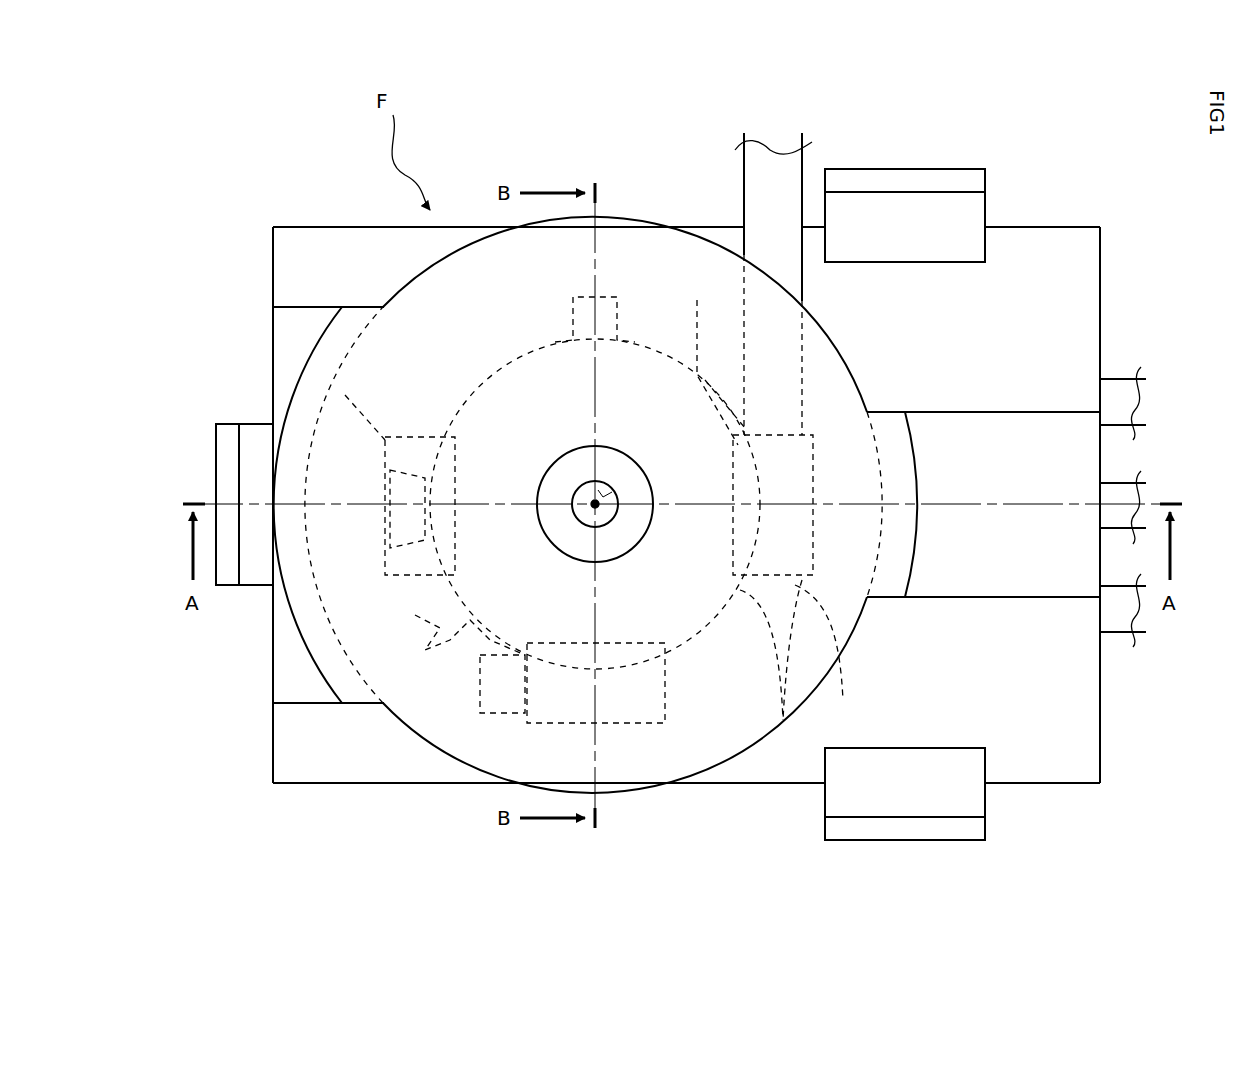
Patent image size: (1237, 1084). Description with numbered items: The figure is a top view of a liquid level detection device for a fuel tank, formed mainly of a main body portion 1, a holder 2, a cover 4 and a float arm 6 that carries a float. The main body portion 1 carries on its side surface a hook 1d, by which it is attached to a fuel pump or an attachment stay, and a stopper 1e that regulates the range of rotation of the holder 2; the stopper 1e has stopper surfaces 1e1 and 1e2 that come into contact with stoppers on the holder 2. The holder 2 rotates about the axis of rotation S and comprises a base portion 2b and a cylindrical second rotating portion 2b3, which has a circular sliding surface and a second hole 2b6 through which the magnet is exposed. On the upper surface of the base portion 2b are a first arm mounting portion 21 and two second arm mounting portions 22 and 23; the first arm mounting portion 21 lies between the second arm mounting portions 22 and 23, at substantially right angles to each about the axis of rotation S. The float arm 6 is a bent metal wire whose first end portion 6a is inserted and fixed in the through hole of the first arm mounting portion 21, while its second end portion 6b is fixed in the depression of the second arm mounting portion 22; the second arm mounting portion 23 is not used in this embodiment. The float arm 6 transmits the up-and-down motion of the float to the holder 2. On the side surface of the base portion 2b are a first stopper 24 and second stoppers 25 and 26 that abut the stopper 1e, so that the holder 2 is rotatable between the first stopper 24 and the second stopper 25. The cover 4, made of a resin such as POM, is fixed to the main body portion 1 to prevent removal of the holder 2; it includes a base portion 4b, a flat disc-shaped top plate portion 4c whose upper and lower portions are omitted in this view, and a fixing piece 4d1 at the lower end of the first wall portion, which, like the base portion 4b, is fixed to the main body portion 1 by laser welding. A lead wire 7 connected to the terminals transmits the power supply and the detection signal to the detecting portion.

The main body portion 1 is at (1030, 238).
The hook 1d is at (950, 185).
The stopper 1e is at (395, 500).
The stopper surface 1e1 is at (410, 455).
The stopper surface 1e2 is at (345, 595).
The holder 2 is at (522, 333).
The base portion 2b is at (440, 430).
The second rotating portion 2b3 is at (622, 533).
The second hole 2b6 is at (603, 490).
The cover 4 is at (415, 715).
The base portion 4b is at (1000, 590).
The top plate portion 4c is at (458, 745).
The fixing piece 4d1 is at (292, 325).
The float arm 6 is at (795, 185).
The first end portion 6a is at (500, 713).
The second end portion 6b is at (843, 700).
The lead wire 7 is at (1113, 395).
The first arm mounting portion 21 is at (600, 530).
The second arm mounting portion 22 is at (697, 300).
The second arm mounting portion 23 is at (390, 478).
The first stopper 24 is at (605, 297).
The second stopper 25 is at (407, 643).
The second stopper 26 is at (783, 720).
The axis of rotation S is at (598, 508).